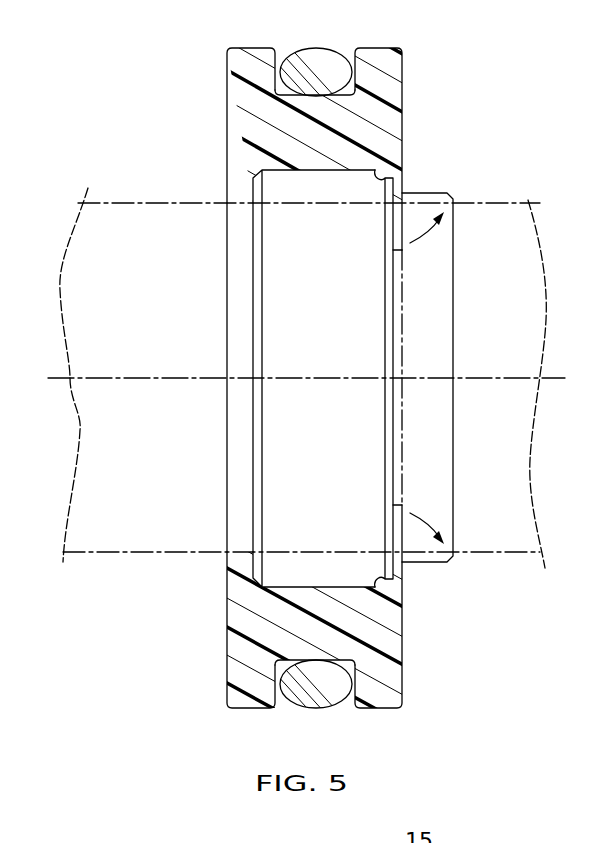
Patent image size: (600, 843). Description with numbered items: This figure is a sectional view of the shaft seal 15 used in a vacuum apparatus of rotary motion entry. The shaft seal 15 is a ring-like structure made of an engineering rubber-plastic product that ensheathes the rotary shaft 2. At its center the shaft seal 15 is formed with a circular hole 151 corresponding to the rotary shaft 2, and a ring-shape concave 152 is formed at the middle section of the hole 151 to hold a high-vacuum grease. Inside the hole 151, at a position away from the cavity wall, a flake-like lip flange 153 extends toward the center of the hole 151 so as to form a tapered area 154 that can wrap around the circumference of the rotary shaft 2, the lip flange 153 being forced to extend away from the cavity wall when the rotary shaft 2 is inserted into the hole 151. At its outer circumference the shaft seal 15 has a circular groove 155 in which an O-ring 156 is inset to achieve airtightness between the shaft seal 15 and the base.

The rotary shaft 2 is at (143, 202).
The shaft seal 15 is at (228, 118).
The circular hole 151 is at (240, 207).
The ring-shape concave 152 is at (319, 172).
The lip flange 153 is at (432, 193).
The tapered area 154 is at (379, 171).
The circular groove 155 is at (297, 63).
The O-ring 156 is at (316, 52).